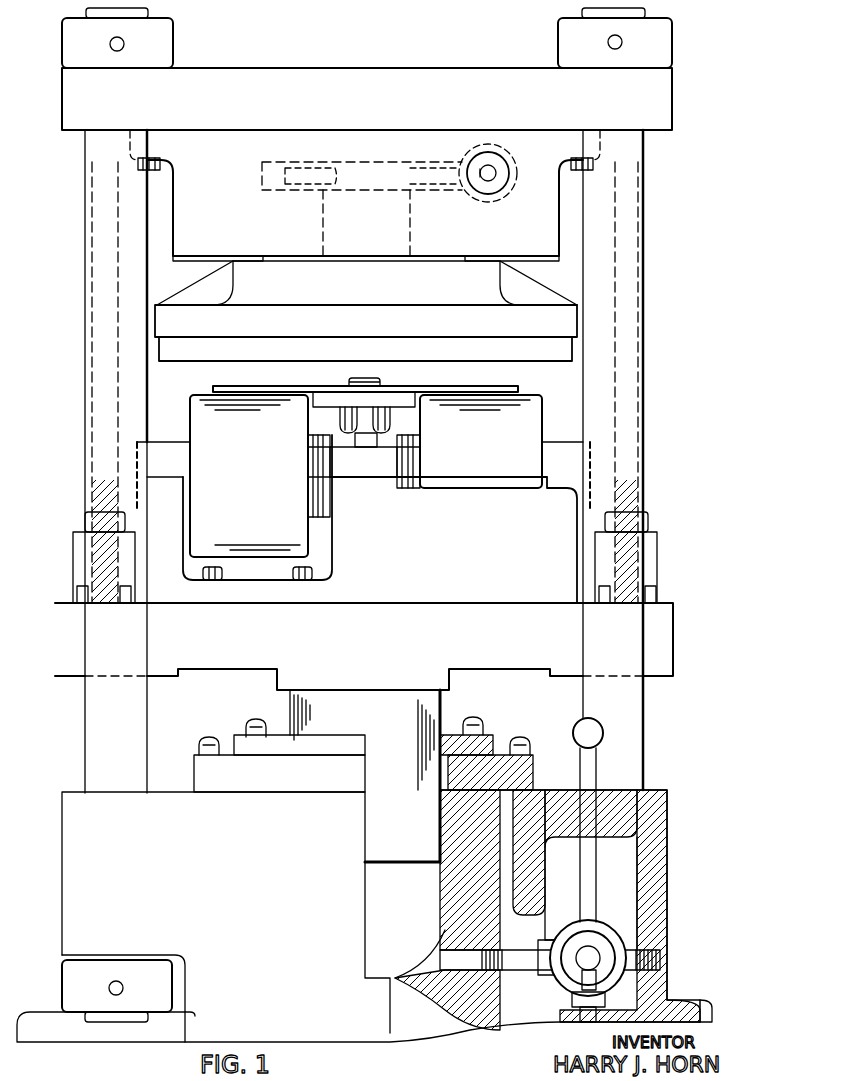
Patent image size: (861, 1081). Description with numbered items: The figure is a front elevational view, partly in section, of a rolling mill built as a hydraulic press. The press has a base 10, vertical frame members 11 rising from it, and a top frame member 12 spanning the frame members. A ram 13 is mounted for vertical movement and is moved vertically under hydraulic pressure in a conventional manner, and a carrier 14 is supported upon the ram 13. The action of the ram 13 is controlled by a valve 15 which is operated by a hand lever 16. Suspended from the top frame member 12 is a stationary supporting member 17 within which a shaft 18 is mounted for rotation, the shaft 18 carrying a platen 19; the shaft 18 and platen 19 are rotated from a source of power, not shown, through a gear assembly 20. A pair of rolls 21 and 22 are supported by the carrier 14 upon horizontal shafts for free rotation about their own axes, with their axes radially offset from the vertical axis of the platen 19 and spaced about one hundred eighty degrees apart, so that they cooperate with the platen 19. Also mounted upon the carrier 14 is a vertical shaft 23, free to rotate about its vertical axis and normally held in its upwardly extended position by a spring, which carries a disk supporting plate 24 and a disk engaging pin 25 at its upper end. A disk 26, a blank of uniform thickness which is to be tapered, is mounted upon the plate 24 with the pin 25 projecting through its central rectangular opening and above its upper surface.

The base 10 is at (253, 880).
The vertical frame members 11 is at (635, 707).
The top frame member 12 is at (367, 69).
The ram 13 is at (441, 703).
The carrier 14 is at (360, 519).
The valve 15 is at (565, 986).
The hand lever 16 is at (583, 722).
The stationary supporting member 17 is at (365, 210).
The shaft 18 is at (400, 220).
The platen 19 is at (513, 357).
The gear assembly 20 is at (470, 165).
The roll 21 is at (249, 476).
The roll 22 is at (481, 441).
The vertical shaft 23 is at (377, 447).
The disk supporting plate 24 is at (338, 405).
The disk engaging pin 25 is at (378, 382).
The disk 26 is at (227, 386).